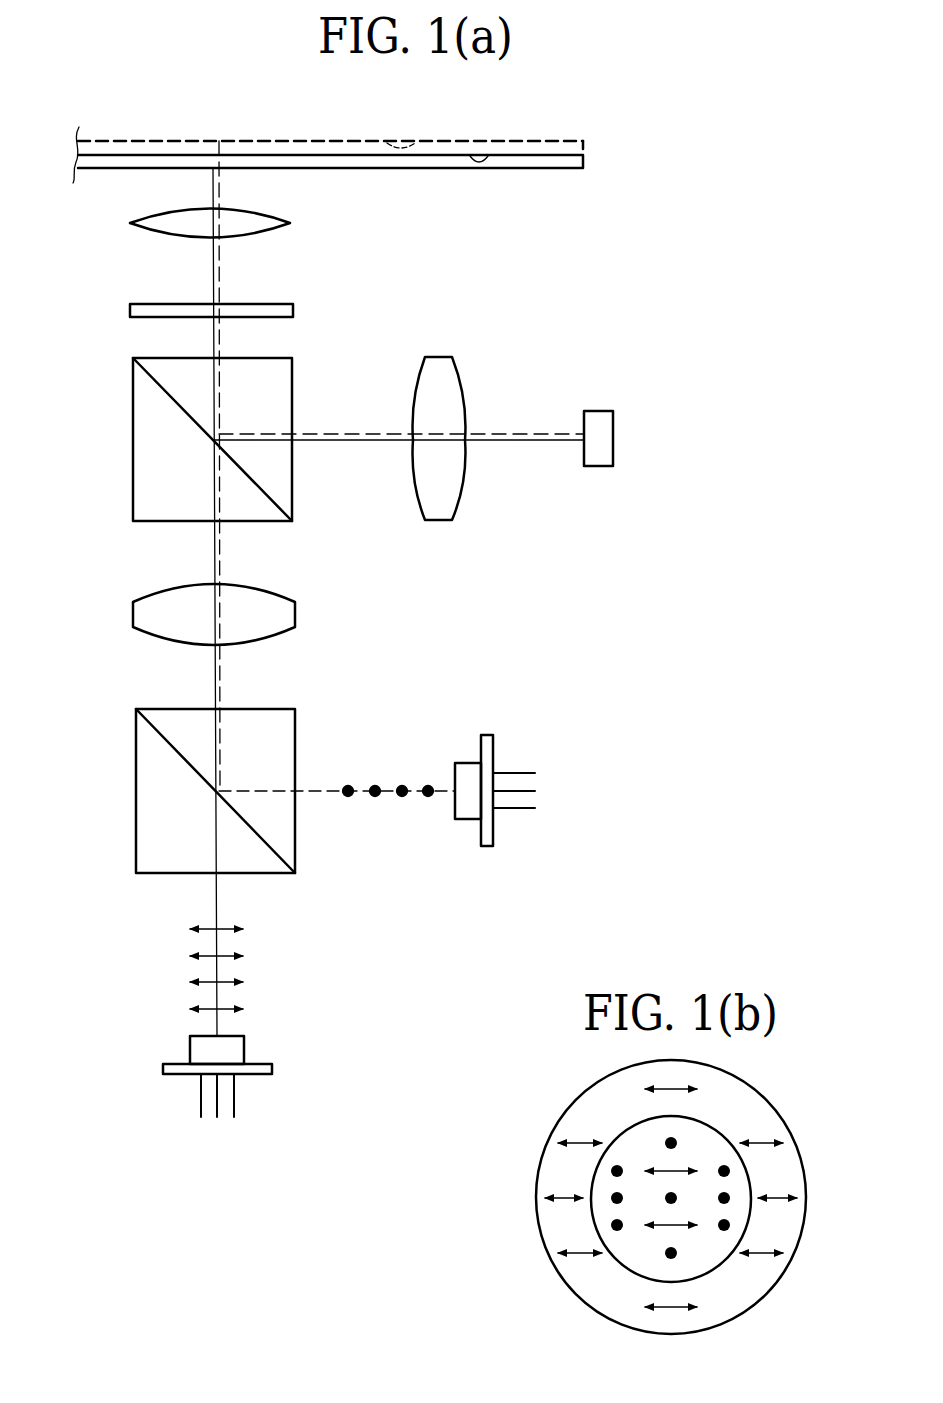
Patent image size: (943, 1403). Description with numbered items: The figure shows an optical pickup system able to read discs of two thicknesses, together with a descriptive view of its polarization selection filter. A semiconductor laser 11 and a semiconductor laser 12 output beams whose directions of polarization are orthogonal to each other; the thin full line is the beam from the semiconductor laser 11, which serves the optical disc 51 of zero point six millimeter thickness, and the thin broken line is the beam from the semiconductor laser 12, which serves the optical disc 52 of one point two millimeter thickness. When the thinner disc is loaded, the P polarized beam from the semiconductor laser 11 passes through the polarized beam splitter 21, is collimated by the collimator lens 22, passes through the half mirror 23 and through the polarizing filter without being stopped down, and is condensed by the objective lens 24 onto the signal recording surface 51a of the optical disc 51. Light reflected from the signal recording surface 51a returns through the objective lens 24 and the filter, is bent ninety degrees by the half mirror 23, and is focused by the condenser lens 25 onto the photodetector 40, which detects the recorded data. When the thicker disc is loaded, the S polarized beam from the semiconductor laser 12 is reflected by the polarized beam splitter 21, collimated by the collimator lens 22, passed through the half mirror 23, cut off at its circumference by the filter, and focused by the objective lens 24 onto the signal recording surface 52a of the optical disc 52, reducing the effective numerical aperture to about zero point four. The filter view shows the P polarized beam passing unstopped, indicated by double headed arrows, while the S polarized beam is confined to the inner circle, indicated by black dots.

The semiconductor laser 11 is at (163, 1070).
The semiconductor laser 12 is at (493, 827).
The polarized beam splitter 21 is at (152, 875).
The collimator lens 22 is at (133, 628).
The half mirror 23 is at (133, 518).
The objective lens 24 is at (150, 226).
The condenser lens 25 is at (437, 357).
The photodetector 40 is at (596, 411).
The optical disc 51 is at (583, 162).
The signal recording surface 51a is at (488, 157).
The optical disc 52 is at (584, 141).
The signal recording surface 52a is at (416, 139).